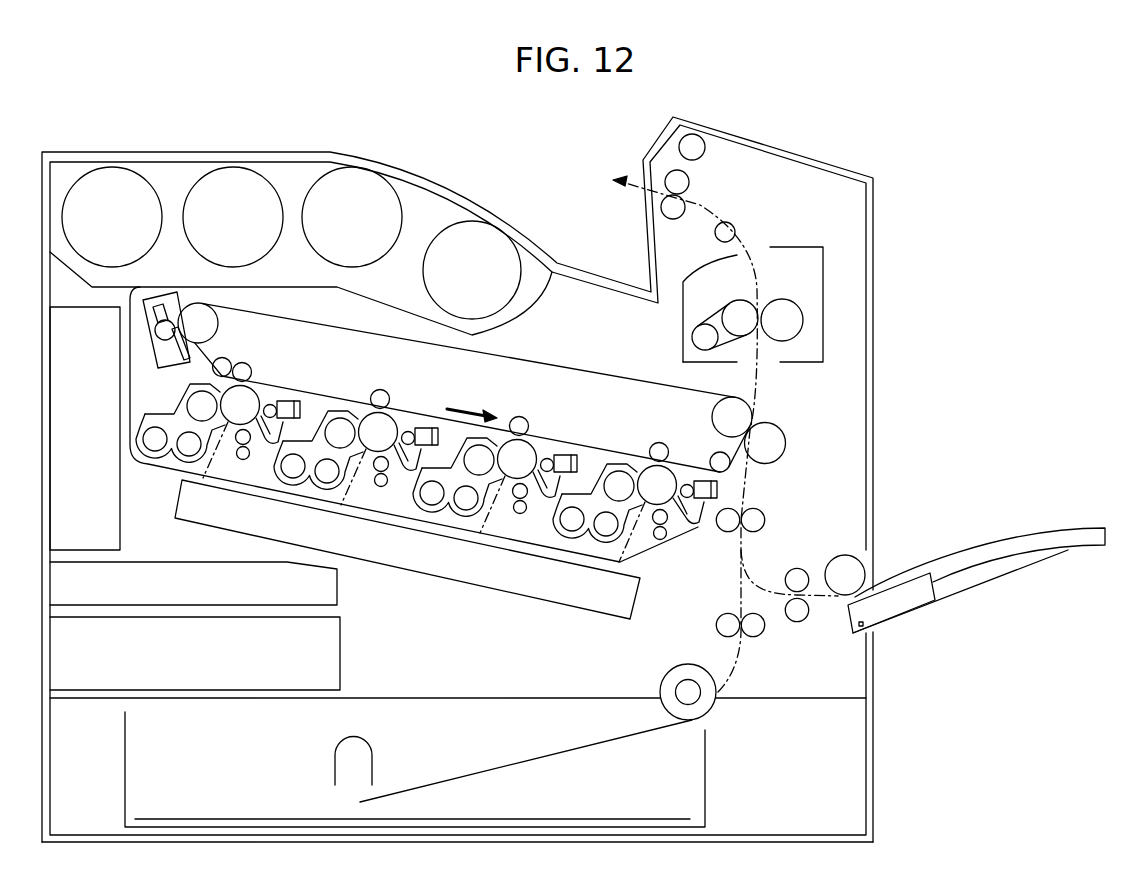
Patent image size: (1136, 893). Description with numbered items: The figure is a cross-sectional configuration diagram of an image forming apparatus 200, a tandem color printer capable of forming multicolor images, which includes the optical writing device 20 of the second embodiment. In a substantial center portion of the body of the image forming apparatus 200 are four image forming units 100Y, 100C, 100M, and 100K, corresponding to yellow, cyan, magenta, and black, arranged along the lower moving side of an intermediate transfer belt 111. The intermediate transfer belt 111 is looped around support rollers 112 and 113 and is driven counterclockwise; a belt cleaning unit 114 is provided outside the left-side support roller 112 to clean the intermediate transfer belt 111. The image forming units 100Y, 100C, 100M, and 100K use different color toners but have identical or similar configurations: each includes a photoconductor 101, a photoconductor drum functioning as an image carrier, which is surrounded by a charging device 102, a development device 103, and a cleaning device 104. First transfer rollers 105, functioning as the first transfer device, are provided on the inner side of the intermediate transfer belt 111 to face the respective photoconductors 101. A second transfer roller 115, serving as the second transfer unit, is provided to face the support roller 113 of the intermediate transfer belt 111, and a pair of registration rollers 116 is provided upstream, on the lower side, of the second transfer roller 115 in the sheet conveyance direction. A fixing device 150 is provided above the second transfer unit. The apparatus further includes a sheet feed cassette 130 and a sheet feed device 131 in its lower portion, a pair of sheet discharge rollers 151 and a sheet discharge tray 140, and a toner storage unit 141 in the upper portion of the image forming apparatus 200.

The image forming apparatus 200 is at (912, 152).
The toner storage unit 141 is at (303, 168).
The sheet discharge tray 140 is at (452, 180).
The pair of sheet discharge rollers 151 is at (690, 186).
The fixing device 150 is at (793, 246).
The support roller 112 is at (219, 323).
The belt cleaning unit 114 is at (150, 346).
The intermediate transfer belt 111 is at (540, 362).
The support roller 113 is at (712, 412).
The second transfer roller 115 is at (776, 460).
The pair of registration rollers 116 is at (760, 530).
The photoconductor 101 is at (449, 445).
The first transfer roller 105 is at (249, 364).
The cleaning device 104 is at (287, 400).
The development device 103 is at (149, 461).
The charging device 102 is at (229, 458).
The optical writing device 20 is at (490, 590).
The sheet feed device 131 is at (678, 664).
The sheet feed cassette 130 is at (706, 767).
The image forming unit 100Y is at (156, 405).
The image forming unit 100C is at (275, 470).
The image forming unit 100M is at (412, 502).
The image forming unit 100K is at (555, 528).